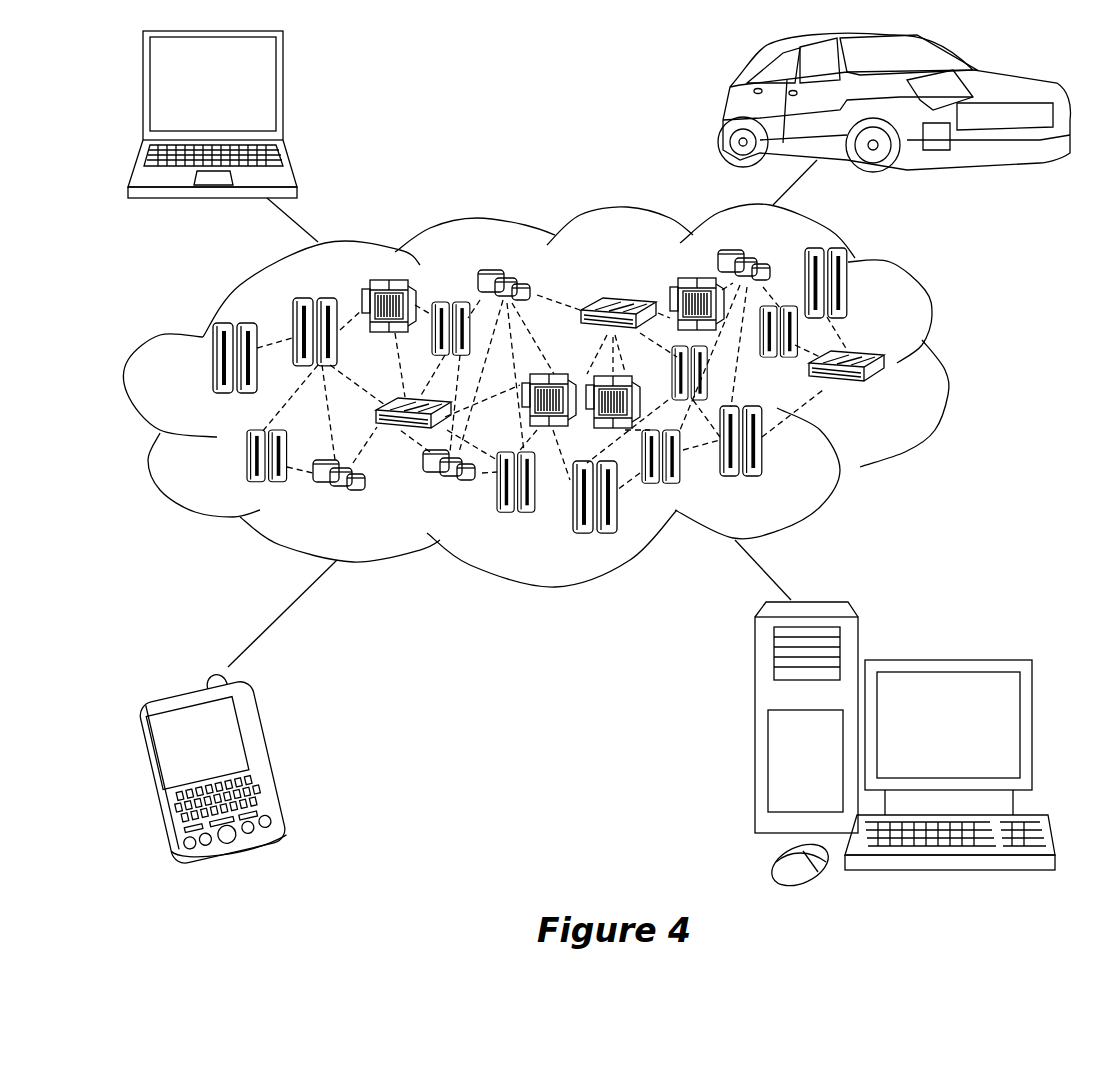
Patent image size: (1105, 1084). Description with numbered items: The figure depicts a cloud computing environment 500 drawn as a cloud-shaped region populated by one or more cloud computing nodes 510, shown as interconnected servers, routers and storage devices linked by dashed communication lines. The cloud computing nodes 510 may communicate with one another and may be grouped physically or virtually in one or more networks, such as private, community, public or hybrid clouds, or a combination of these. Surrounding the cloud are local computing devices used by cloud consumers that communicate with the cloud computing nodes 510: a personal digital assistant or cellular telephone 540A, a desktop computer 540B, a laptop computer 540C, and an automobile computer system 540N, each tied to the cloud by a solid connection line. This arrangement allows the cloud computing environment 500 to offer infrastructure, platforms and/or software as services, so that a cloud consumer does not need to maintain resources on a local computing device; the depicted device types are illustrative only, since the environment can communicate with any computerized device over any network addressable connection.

The cloud computing environment 500 is at (945, 370).
The cloud computing nodes 510 is at (892, 401).
The personal digital assistant (PDA) or cellular telephone 540A is at (277, 754).
The desktop computer 540B is at (947, 657).
The laptop computer 540C is at (283, 94).
The automobile computer system 540N is at (724, 111).